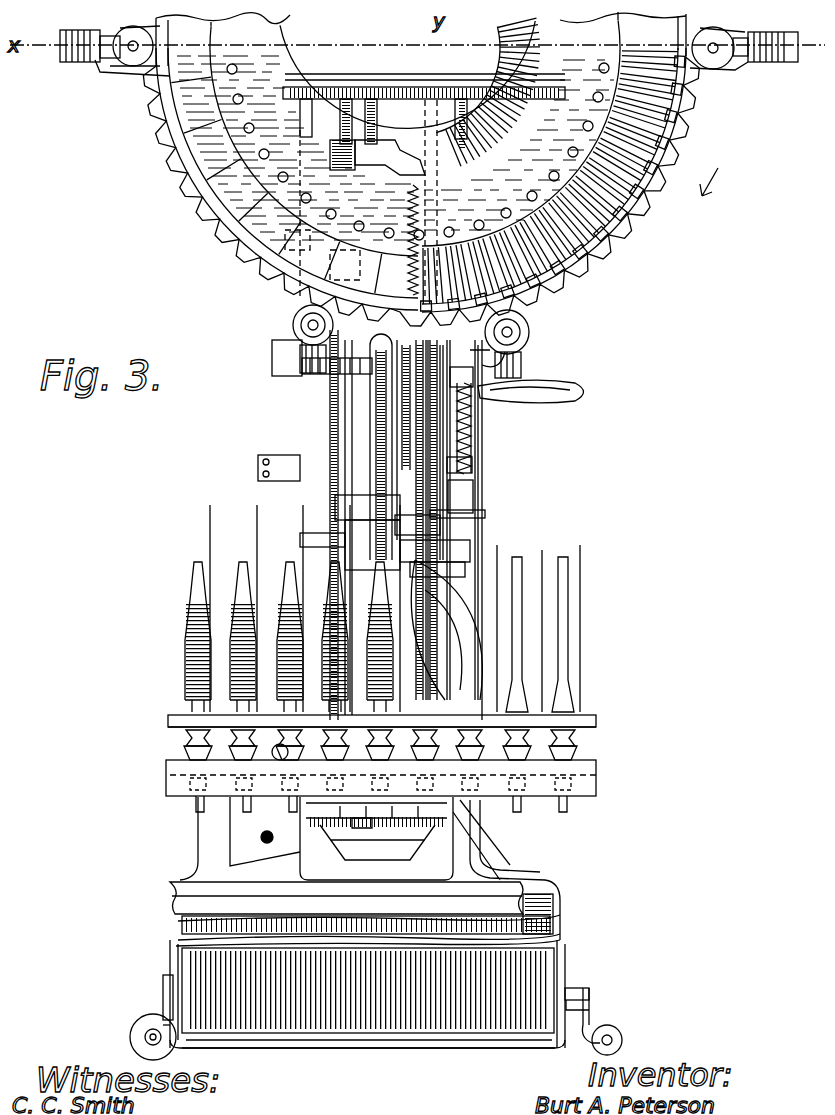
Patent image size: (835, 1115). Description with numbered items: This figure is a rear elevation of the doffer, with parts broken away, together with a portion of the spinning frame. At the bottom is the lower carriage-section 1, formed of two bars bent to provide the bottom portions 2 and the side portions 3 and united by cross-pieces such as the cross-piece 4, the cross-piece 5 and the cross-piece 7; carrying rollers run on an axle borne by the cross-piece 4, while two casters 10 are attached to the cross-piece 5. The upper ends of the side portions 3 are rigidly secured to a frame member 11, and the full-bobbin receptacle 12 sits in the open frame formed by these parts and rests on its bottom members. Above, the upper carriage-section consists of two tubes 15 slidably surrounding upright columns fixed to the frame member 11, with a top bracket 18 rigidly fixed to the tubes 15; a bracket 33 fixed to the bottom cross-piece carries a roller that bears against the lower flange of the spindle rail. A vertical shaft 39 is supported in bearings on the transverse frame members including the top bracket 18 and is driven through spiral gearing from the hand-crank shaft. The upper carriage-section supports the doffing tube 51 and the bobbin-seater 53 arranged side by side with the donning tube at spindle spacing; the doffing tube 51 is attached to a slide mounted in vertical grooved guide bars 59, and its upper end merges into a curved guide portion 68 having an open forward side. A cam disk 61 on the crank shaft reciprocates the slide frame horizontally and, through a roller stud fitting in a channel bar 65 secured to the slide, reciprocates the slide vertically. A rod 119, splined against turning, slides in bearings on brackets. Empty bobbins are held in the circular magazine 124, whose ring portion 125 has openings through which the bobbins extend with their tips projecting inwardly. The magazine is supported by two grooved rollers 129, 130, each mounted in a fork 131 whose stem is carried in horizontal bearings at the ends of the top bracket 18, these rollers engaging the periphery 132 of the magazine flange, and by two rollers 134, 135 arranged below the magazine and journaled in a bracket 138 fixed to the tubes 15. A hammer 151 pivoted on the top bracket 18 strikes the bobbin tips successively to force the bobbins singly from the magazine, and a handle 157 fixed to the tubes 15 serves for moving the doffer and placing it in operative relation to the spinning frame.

The lower carriage-section 1 is at (127, 990).
The bottom portions 2 is at (402, 1050).
The side portions 3 is at (176, 932).
The cross-piece 4 is at (163, 1005).
The cross-piece 5 is at (590, 990).
The cross-piece 7 is at (560, 914).
The casters 10 is at (620, 1042).
The frame member 11 is at (335, 830).
The full-bobbin receptacle 12 is at (367, 998).
The tubes 15 is at (462, 110).
The top bracket 18 is at (402, 86).
The bracket 33 is at (440, 850).
The vertical shaft 39 is at (312, 112).
The doffing tube 51 is at (380, 468).
The bobbin-seater 53 is at (482, 518).
The vertical grooved guide bars 59 is at (348, 420).
The cam disk 61 is at (450, 608).
The channel bar 65 is at (320, 535).
The curved guide portion 68 is at (372, 372).
The rod 119 is at (468, 492).
The magazine 124 is at (215, 198).
The ring portion 125 is at (288, 34).
The grooved roller 129 is at (130, 78).
The grooved roller 130 is at (708, 69).
The fork 131 is at (100, 65).
The periphery 132 is at (172, 125).
The roller 134 is at (292, 316).
The roller 135 is at (530, 328).
The bracket 138 is at (272, 358).
The hammer 151 is at (390, 160).
The handle 157 is at (562, 384).